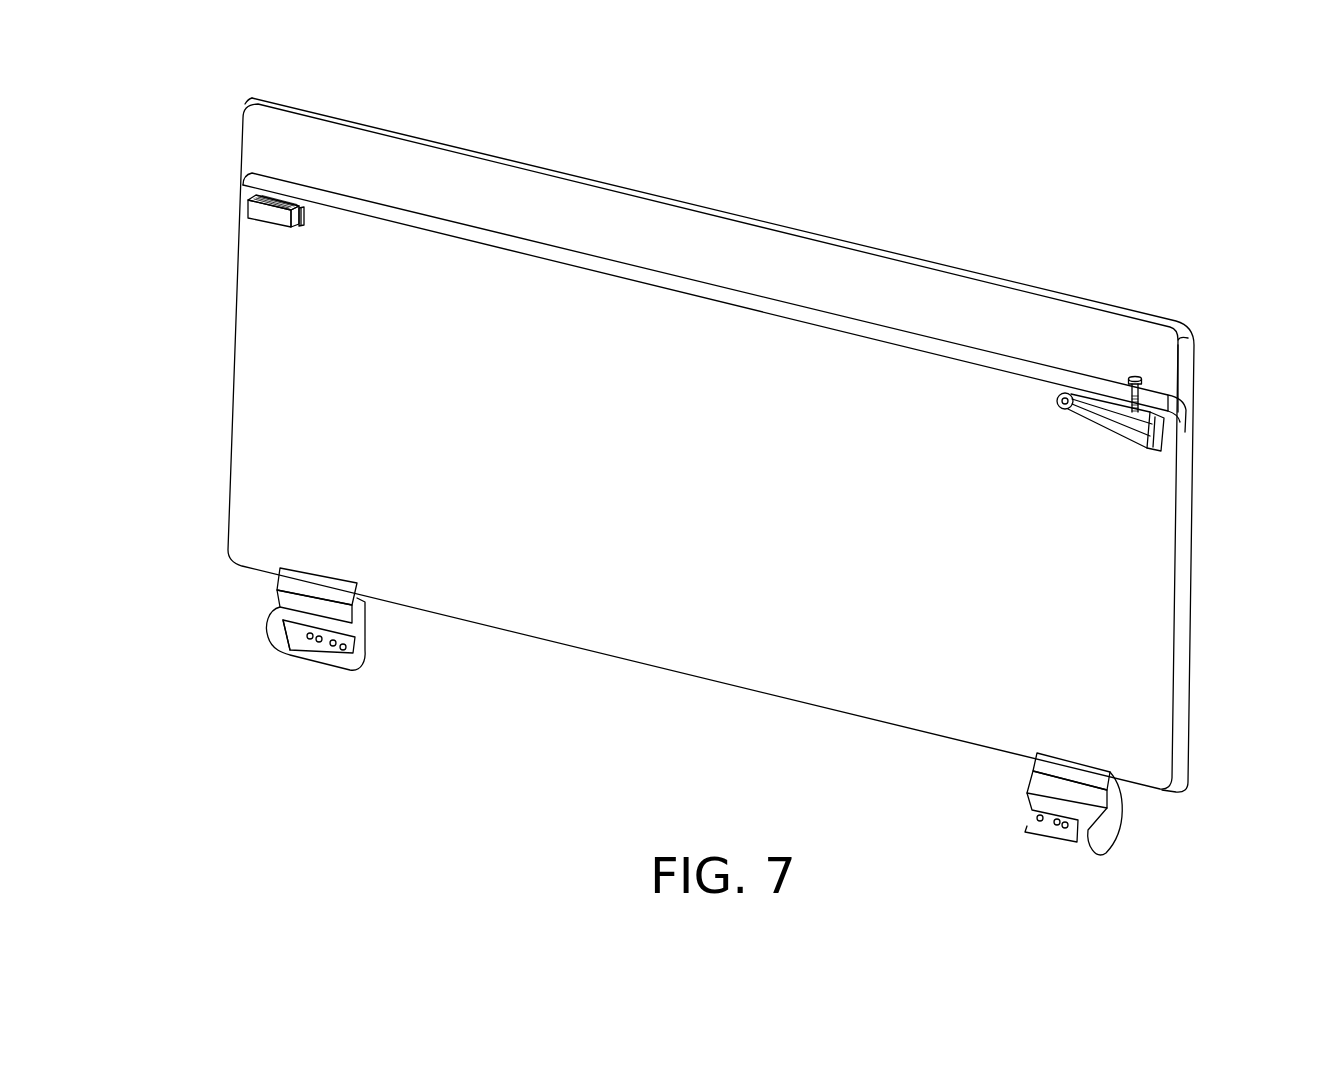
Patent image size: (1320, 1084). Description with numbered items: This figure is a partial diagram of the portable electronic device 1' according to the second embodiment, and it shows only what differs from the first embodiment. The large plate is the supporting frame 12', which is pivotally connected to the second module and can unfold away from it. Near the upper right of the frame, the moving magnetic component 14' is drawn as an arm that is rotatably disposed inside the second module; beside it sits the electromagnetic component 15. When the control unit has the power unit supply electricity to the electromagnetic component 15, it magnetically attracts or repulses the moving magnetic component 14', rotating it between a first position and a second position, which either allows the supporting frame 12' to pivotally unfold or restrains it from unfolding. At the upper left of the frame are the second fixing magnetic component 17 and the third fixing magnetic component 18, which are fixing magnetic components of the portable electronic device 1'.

The portable electronic device 1' is at (730, 476).
The supporting frame 12' is at (711, 445).
The moving magnetic component 14' is at (1165, 448).
The electromagnetic component 15 is at (1141, 388).
The second fixing magnetic component 17 is at (272, 218).
The third fixing magnetic component 18 is at (302, 213).